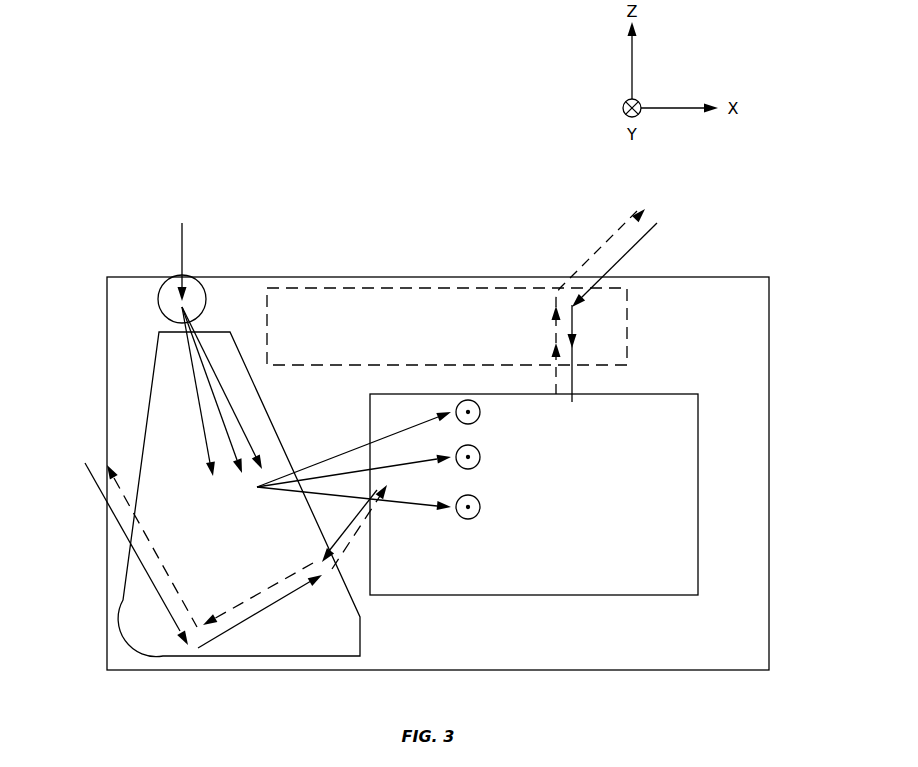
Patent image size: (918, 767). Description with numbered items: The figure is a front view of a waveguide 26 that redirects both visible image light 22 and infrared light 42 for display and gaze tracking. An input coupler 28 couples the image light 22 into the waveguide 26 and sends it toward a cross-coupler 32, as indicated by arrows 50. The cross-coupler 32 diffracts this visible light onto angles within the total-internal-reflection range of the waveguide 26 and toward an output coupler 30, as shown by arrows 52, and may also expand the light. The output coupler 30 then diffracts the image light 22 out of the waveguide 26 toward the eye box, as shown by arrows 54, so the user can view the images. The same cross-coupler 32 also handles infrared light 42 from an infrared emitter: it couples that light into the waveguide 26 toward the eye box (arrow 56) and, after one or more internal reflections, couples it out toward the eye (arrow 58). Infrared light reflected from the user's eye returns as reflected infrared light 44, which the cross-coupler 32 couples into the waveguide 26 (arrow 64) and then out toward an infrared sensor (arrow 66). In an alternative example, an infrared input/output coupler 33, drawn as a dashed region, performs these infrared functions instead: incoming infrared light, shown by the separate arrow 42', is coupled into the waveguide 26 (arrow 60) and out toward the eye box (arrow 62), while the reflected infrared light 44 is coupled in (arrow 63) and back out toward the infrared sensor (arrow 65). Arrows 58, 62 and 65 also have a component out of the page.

The image light 22 is at (180, 243).
The waveguide 26 is at (769, 385).
The input coupler 28 is at (195, 276).
The output coupler 30 is at (630, 595).
The cross-coupler 32 is at (148, 392).
The infrared input/output coupler 33 is at (457, 288).
The infrared light 42 is at (109, 554).
The outgoing light beam 42' is at (636, 265).
The reflected infrared light 44 is at (353, 520).
The arrows 50 is at (220, 453).
The arrows 52 is at (313, 492).
The arrows 54 is at (480, 420).
The arrow 56 is at (302, 592).
The arrow 58 is at (347, 550).
The arrow 60 is at (574, 325).
The arrow 62 is at (574, 370).
The arrow 63 is at (554, 325).
The arrow 64 is at (277, 583).
The arrow 65 is at (617, 237).
The arrow 66 is at (142, 530).